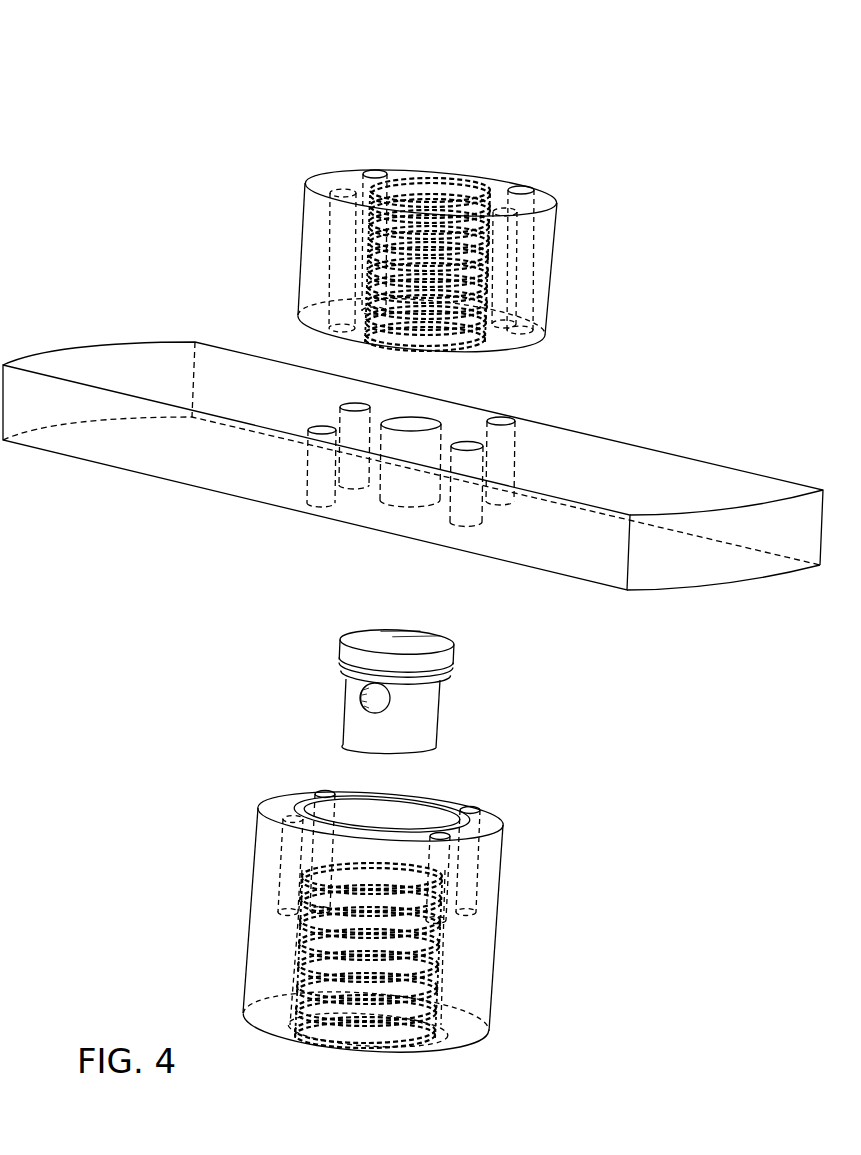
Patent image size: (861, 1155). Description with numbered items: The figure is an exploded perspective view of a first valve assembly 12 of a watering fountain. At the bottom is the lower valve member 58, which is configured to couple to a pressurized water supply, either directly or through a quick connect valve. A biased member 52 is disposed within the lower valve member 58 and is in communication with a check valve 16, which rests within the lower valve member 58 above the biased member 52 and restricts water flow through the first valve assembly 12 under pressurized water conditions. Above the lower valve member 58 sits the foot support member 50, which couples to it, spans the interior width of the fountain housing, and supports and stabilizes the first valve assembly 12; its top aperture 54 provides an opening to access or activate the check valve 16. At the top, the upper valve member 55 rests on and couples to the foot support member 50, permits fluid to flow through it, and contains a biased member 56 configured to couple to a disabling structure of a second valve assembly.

The first valve assembly 12 is at (99, 87).
The check valve 16 is at (428, 717).
The foot support member 50 is at (693, 480).
The biased member 52 is at (443, 958).
The top aperture 54 is at (420, 418).
The upper valve member 55 is at (581, 303).
The biased member 56 is at (476, 165).
The lower valve member 58 is at (188, 915).